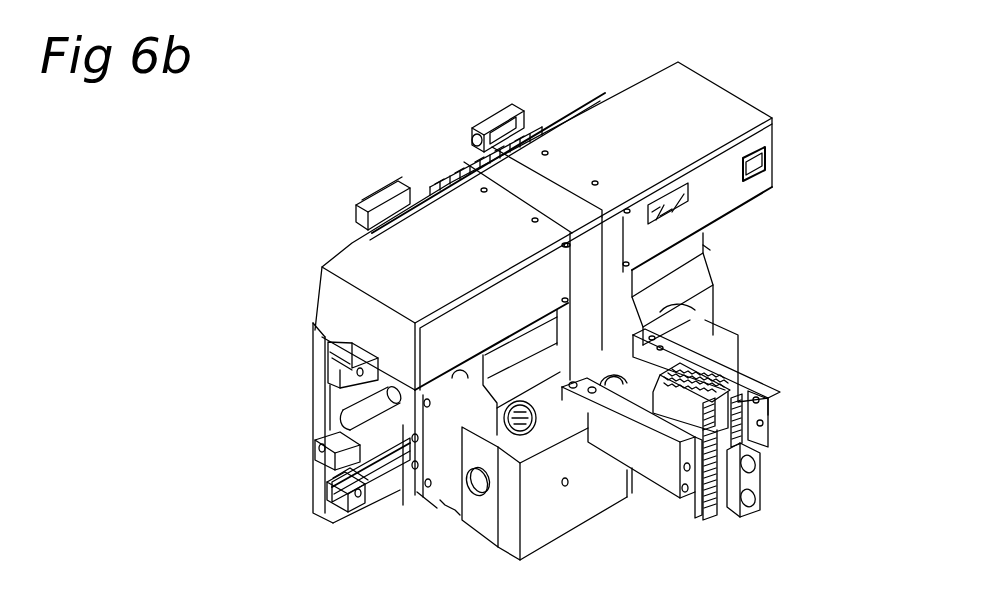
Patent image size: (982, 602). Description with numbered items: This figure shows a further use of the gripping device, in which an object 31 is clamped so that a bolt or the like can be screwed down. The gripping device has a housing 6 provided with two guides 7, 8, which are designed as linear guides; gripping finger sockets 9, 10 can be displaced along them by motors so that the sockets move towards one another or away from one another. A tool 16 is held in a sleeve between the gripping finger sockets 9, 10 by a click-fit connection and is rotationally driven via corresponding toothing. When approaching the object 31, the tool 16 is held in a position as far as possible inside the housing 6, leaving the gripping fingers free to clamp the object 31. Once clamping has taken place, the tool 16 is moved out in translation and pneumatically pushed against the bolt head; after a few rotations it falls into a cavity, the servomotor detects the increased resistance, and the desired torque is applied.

The housing 6 is at (610, 108).
The guide 7 is at (330, 372).
The guide 8 is at (332, 493).
The gripping finger socket 9 is at (474, 532).
The gripping finger socket 10 is at (715, 268).
The tool 16 is at (623, 384).
The object 31 is at (778, 437).